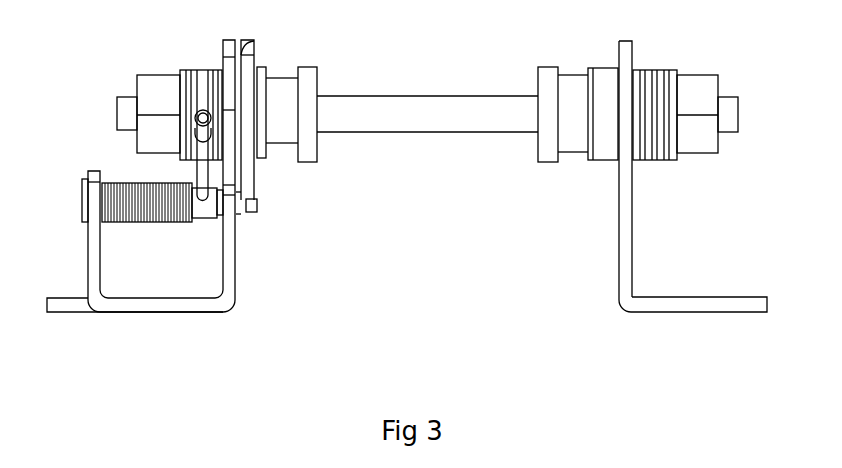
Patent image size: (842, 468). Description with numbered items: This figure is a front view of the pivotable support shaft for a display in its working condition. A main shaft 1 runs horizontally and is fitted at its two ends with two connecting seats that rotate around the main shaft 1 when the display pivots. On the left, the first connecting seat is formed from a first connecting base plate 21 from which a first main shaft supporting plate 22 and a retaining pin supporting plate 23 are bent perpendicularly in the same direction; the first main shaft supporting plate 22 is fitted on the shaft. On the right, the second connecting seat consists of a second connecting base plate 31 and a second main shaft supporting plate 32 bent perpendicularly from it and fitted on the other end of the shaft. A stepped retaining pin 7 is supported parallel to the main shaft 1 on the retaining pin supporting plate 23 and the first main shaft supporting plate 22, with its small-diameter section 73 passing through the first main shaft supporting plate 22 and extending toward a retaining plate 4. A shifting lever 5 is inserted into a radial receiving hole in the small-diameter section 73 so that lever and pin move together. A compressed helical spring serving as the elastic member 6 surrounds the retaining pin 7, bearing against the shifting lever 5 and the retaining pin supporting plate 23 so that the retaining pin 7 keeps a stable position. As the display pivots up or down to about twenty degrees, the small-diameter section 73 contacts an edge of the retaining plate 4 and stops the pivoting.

The main shaft 1 is at (407, 120).
The retaining plate 4 is at (250, 183).
The shifting lever 5 is at (200, 110).
The elastic member 6 is at (120, 184).
The retaining pin 7 is at (85, 200).
The first connecting base plate 21 is at (170, 303).
The first main shaft supporting plate 22 is at (231, 276).
The retaining pin supporting plate 23 is at (92, 265).
The second connecting base plate 31 is at (700, 305).
The second main shaft supporting plate 32 is at (619, 248).
The small-diameter section 73 is at (254, 210).